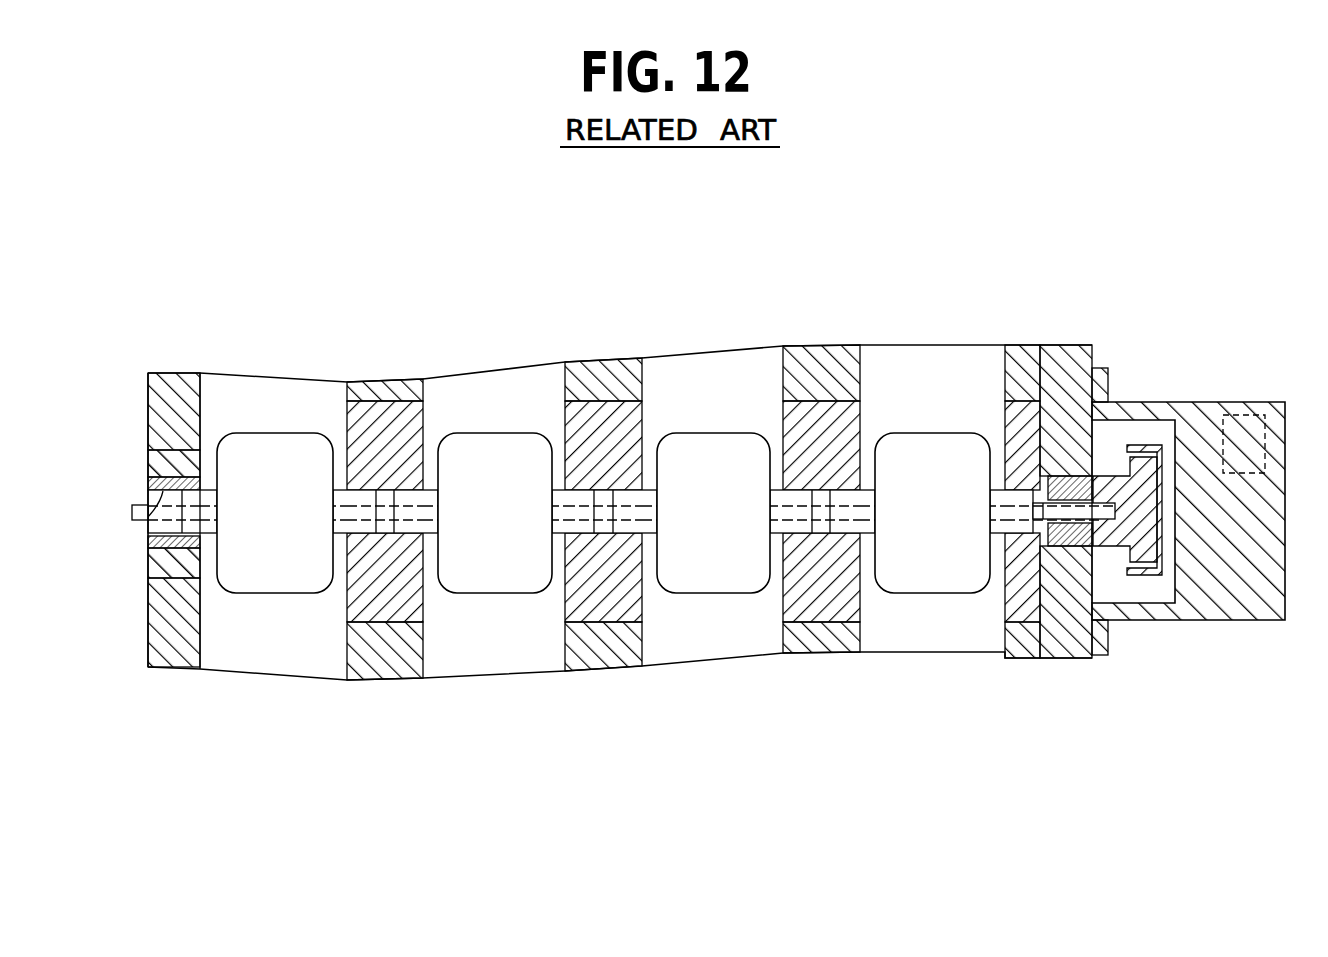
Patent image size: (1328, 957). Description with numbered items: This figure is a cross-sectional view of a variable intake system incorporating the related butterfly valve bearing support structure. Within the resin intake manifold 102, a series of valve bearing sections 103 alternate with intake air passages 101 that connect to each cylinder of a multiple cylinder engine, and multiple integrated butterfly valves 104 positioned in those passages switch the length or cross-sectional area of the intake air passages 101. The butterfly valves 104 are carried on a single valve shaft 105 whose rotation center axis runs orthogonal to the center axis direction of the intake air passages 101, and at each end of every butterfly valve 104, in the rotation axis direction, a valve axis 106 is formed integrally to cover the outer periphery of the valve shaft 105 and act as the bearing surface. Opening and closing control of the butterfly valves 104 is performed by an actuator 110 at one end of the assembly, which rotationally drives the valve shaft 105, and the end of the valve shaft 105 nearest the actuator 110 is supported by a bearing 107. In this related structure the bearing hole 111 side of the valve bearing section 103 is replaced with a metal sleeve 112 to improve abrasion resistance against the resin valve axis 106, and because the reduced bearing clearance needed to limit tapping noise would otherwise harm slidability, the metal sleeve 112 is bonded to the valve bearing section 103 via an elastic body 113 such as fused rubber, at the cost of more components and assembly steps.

The intake air passage 101 is at (275, 392).
The intake manifold 102 is at (1072, 328).
The valve bearing section 103 is at (180, 383).
The butterfly valve 104 is at (285, 585).
The valve shaft 105 is at (130, 512).
The valve axis 106 is at (150, 533).
The bearing 107 is at (1062, 548).
The actuator 110 is at (1256, 393).
The bearing hole 111 is at (145, 521).
The metal sleeve 112 is at (148, 487).
The elastic body 113 is at (148, 458).